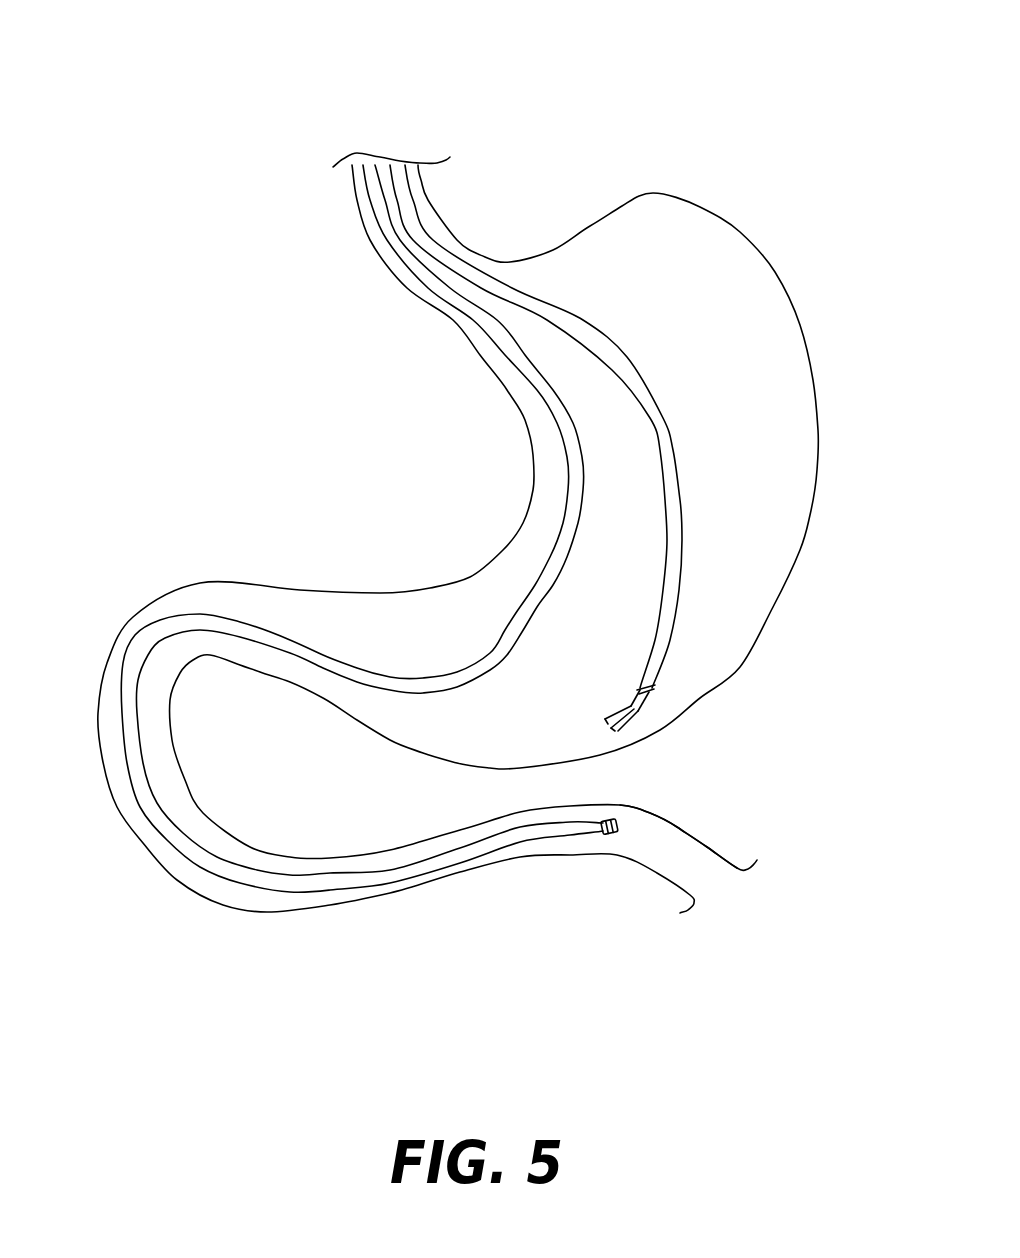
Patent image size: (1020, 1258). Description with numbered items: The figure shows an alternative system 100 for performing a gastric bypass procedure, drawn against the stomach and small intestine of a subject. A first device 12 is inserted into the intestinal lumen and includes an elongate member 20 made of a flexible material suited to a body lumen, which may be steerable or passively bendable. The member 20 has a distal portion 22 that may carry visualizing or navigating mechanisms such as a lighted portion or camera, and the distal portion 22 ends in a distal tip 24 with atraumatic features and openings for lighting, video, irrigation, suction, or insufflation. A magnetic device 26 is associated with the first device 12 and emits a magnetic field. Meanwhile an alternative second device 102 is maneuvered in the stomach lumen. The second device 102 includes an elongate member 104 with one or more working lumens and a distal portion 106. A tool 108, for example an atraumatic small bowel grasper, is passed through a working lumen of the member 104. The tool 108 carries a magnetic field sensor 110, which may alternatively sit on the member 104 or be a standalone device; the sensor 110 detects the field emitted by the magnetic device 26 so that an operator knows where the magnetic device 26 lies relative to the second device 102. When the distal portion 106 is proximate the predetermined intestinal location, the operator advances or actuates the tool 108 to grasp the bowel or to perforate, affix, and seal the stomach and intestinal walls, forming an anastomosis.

The alternative system 100 is at (584, 145).
The second device 102 is at (692, 463).
The elongate member 104 is at (628, 355).
The distal portion 106 is at (722, 708).
The tool 108 is at (629, 710).
The magnetic field sensor 110 is at (645, 695).
The first device 12 is at (152, 612).
The elongate member 20 is at (290, 892).
The distal portion 22 is at (613, 856).
The distal tip 24 is at (618, 830).
The magnetic device 26 is at (604, 834).